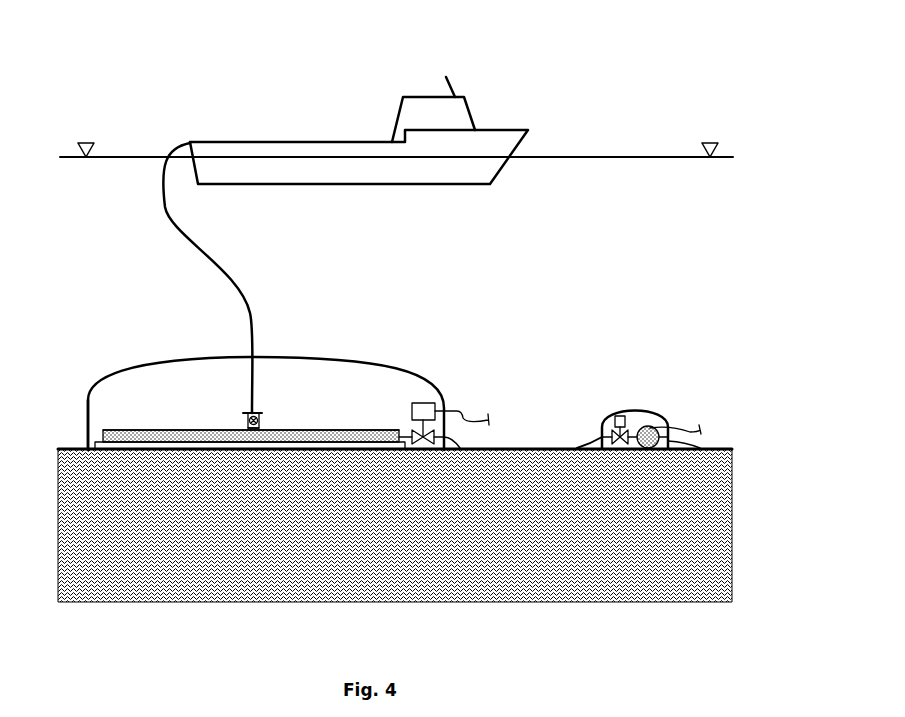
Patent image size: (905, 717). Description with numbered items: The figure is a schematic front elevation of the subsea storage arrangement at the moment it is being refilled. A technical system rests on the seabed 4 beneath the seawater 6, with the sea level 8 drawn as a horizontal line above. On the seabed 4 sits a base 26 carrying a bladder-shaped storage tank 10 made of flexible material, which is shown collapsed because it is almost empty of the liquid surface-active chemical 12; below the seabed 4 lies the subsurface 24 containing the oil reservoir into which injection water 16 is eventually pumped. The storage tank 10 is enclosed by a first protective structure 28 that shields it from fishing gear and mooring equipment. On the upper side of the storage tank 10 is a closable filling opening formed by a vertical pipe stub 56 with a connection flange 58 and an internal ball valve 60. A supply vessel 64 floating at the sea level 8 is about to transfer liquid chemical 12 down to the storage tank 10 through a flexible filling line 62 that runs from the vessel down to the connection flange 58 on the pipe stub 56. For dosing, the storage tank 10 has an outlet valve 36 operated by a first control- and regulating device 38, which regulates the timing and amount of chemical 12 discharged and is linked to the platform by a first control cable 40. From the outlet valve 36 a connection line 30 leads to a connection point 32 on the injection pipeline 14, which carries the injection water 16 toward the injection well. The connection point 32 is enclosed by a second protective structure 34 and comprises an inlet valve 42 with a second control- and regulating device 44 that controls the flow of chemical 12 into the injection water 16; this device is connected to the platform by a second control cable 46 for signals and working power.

The seabed 4 is at (68, 450).
The seawater 6 is at (96, 254).
The sea level 8 is at (607, 157).
The storage tank 10 is at (385, 430).
The liquid surface-active chemical 12 is at (128, 428).
The injection pipeline 14 is at (670, 442).
The injection water 16 is at (645, 420).
The subsurface 24 is at (106, 592).
The base 26 is at (86, 428).
The first protective structure 28 is at (182, 360).
The connection line 30 is at (590, 443).
The connection point 32 is at (652, 394).
The second protective structure 34 is at (638, 407).
The outlet valve 36 is at (410, 433).
The first control- and regulating device 38 is at (425, 405).
The first control cable 40 is at (457, 410).
The inlet valve 42 is at (612, 435).
The second control- and regulating device 44 is at (617, 415).
The second control cable 46 is at (687, 413).
The vertical pipe stub 56 is at (233, 420).
The connection flange 58 is at (262, 418).
The ball valve 60 is at (265, 422).
The flexible filling line 62 is at (215, 265).
The supply vessel 64 is at (420, 112).